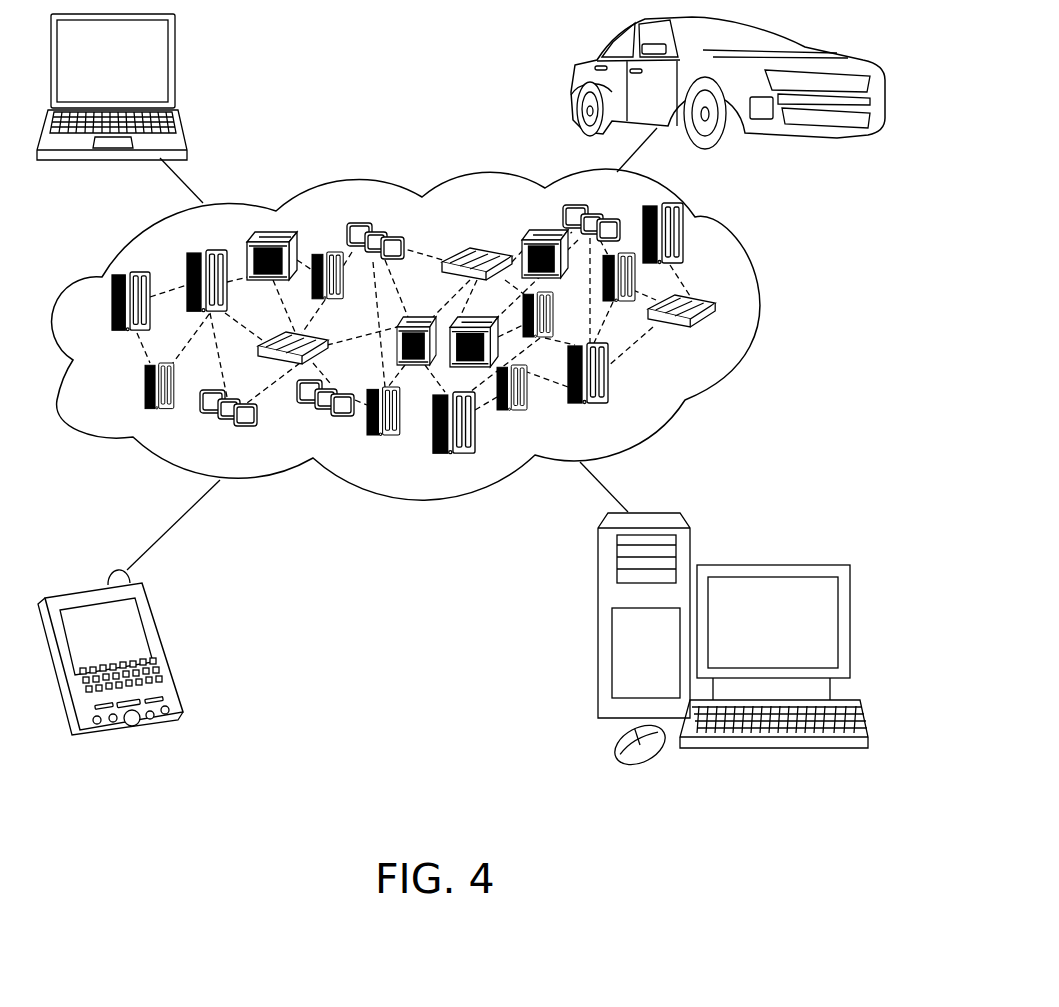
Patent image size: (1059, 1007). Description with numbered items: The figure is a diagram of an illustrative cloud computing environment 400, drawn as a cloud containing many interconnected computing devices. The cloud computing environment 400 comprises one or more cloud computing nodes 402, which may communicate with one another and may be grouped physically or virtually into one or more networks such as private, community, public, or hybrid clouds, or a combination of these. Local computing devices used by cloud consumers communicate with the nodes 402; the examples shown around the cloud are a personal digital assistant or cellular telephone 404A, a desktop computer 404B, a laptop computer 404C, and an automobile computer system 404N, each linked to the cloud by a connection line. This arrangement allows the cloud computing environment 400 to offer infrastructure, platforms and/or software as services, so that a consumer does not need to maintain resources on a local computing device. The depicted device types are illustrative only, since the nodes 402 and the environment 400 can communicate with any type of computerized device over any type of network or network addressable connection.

The cloud computing environment 400 is at (725, 307).
The cloud computing node 402 is at (722, 338).
The personal digital assistant (PDA) or cellular telephone 404A is at (155, 618).
The desktop computer 404B is at (760, 563).
The laptop computer 404C is at (177, 46).
The automobile computer system 404N is at (572, 90).